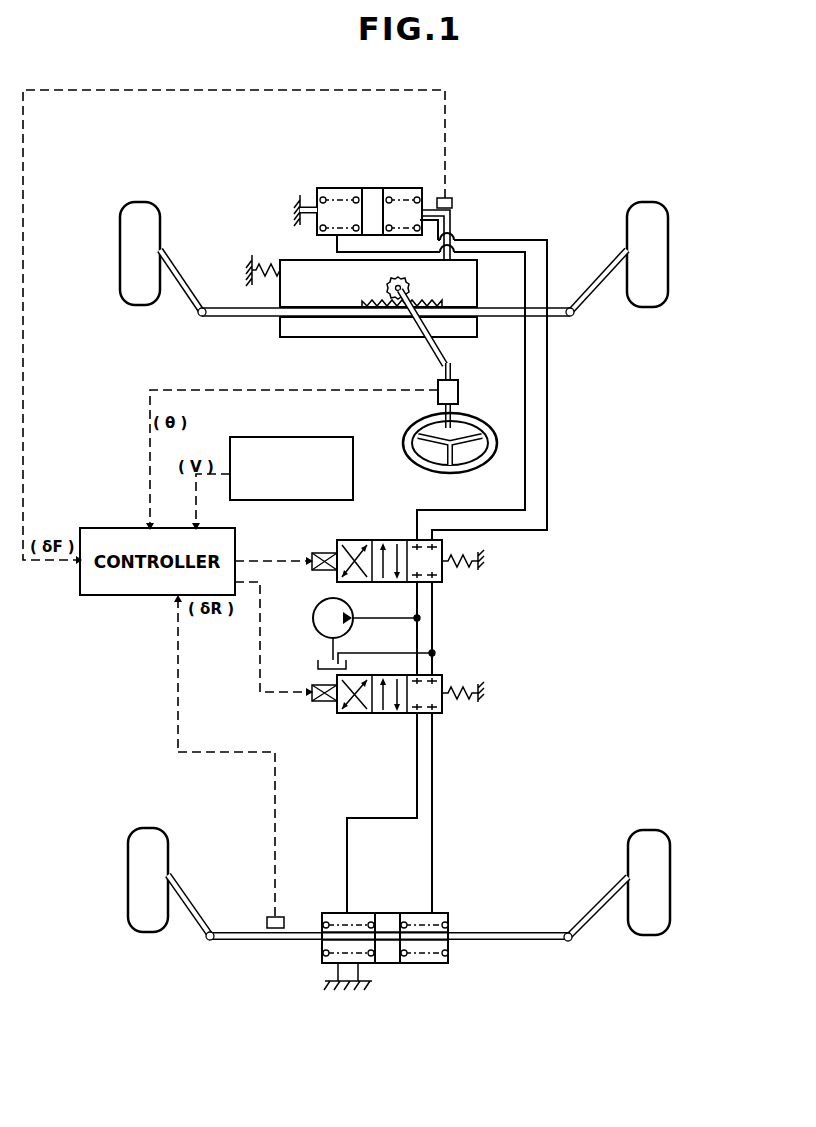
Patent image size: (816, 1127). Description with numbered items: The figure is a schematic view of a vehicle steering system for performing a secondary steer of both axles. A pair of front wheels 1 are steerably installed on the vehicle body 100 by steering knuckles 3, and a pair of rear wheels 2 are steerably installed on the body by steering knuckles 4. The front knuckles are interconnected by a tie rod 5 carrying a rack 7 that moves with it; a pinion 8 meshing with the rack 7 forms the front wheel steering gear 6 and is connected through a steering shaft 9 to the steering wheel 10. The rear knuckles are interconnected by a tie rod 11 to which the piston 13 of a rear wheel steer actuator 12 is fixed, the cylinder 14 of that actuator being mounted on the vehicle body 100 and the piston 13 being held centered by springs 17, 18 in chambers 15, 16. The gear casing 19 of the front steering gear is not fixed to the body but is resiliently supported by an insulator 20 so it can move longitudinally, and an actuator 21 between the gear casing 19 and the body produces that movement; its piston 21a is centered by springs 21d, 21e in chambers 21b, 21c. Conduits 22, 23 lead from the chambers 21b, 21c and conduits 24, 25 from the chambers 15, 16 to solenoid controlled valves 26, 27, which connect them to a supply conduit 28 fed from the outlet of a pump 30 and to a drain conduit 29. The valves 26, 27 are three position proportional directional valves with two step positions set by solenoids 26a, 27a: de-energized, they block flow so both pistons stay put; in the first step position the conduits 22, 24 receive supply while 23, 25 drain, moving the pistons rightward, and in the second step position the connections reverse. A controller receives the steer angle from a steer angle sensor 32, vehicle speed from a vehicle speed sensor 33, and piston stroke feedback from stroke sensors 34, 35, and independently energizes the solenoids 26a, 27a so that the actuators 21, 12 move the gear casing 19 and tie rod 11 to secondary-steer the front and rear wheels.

The front wheel 1 is at (143, 202).
The rear wheel 2 is at (145, 828).
The steering knuckle 3 is at (188, 292).
The steering knuckle 4 is at (185, 890).
The tie rod 5 is at (221, 307).
The front wheel steering gear 6 is at (330, 340).
The rack 7 is at (420, 300).
The pinion 8 is at (386, 284).
The steering shaft 9 is at (450, 350).
The steering wheel 10 is at (437, 470).
The tie rod 11 is at (257, 942).
The actuator 12 is at (397, 934).
The piston 13 is at (388, 962).
The cylinder 14 is at (442, 913).
The chamber 15 is at (336, 918).
The chamber 16 is at (418, 918).
The spring 17 is at (324, 955).
The spring 18 is at (414, 958).
The gear casing 19 is at (300, 260).
The insulator 20 is at (264, 268).
The actuator 21 is at (387, 177).
The piston 21a is at (371, 188).
The chamber 21b is at (326, 188).
The chamber 21c is at (404, 188).
The spring 21d is at (360, 194).
The spring 21e is at (398, 194).
The conduit 22 is at (525, 373).
The conduit 23 is at (548, 403).
The conduit 24 is at (382, 818).
The conduit 25 is at (434, 790).
The solenoid controlled valve 26 is at (381, 555).
The solenoid 26a is at (329, 576).
The solenoid controlled valve 27 is at (373, 708).
The solenoid 27a is at (316, 685).
The supply conduit 28 is at (378, 618).
The drain conduit 29 is at (382, 653).
The pump 30 is at (312, 626).
The steer angle sensor 32 is at (438, 388).
The vehicle speed sensor 33 is at (340, 437).
The stroke sensor 34 is at (452, 203).
The stroke sensor 35 is at (272, 917).
The vehicle body 100 is at (250, 262).